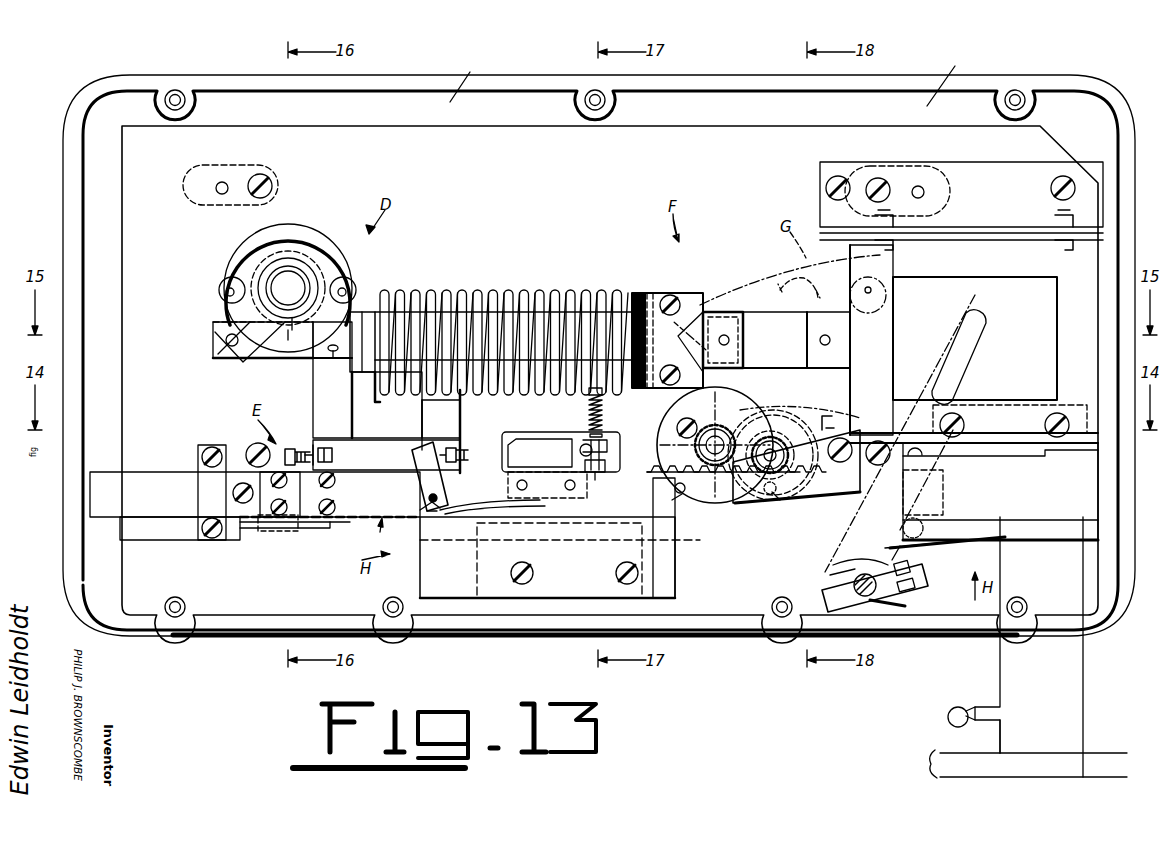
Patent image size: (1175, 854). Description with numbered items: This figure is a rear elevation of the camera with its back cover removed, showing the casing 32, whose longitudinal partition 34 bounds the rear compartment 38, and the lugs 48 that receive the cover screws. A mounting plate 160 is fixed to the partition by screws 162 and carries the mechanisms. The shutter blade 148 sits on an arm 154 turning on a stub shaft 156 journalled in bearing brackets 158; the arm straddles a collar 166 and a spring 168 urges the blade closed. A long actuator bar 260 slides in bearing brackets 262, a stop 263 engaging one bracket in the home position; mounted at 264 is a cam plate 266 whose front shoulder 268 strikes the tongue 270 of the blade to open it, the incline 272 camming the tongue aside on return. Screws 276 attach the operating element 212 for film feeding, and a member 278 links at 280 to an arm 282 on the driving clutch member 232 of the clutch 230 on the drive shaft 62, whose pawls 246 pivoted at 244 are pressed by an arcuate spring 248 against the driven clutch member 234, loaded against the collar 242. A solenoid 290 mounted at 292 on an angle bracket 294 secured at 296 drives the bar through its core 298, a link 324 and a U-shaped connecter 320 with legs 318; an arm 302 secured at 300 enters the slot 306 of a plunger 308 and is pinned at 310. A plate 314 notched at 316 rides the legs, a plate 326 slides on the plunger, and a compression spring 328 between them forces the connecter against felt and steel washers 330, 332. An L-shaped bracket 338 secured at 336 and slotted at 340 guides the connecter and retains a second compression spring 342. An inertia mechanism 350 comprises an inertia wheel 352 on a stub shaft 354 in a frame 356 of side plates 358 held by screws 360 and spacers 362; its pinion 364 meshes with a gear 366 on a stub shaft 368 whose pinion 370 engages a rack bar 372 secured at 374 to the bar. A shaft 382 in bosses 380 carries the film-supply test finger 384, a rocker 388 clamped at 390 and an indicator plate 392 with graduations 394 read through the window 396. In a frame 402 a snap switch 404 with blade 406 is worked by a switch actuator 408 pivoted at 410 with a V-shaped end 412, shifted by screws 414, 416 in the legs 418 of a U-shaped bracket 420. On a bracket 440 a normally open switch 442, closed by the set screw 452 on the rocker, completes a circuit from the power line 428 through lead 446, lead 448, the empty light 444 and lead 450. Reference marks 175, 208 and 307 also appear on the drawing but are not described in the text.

The casing 32 is at (710, 80).
The longitudinal partition 34 is at (948, 79).
The rear compartment 38 is at (468, 80).
The lugs 48 is at (191, 103).
The drive shaft 62 is at (294, 276).
The shutter blade 148 is at (602, 452).
The arm 154 is at (606, 466).
The stub shaft 156 is at (602, 409).
The bearing brackets 158 is at (590, 402).
The mounting plate 160 is at (730, 130).
The screws 162 is at (272, 192).
The collar 166 is at (596, 472).
The combined torsion and compression spring 168 is at (604, 424).
The direction 175 is at (387, 537).
The slide bar 208 is at (332, 526).
The operating element 212 is at (292, 540).
The clutch 230 is at (222, 256).
The driving clutch member 232 is at (290, 252).
The driven clutch member 234 is at (293, 333).
The collar 242 is at (300, 280).
The pivot 244 is at (226, 292).
The pawls 246 is at (222, 280).
The arcuate spring 248 is at (260, 238).
The actuator bar 260 is at (370, 532).
The bearing brackets 262 is at (200, 542).
The stop 263 is at (238, 540).
The mounting 264 is at (540, 490).
The cam plate 266 is at (545, 436).
The front shoulder 268 is at (578, 454).
The tongue 270 is at (586, 444).
The incline 272 is at (540, 453).
The screws 276 is at (274, 534).
The member 278 is at (284, 362).
The pivot connection 280 is at (240, 360).
The arm 282 is at (212, 330).
The solenoid 290 is at (1038, 336).
The mounting 292 is at (898, 248).
The angle bracket 294 is at (964, 172).
The securing points 296 is at (842, 178).
The solenoid core 298 is at (831, 368).
The securing point 300 is at (340, 496).
The arm 302 is at (348, 425).
The longitudinal slot 306 is at (333, 340).
The pin 307 is at (320, 384).
The plunger 308 is at (312, 360).
The pin 310 is at (334, 358).
The plate 314 is at (663, 296).
The notches 316 is at (674, 298).
The parallel legs 318 is at (717, 370).
The U-shaped connecter 320 is at (690, 308).
The link 324 is at (776, 368).
The plate 326 is at (380, 403).
The compression spring 328 is at (492, 284).
The felt washer 330 is at (362, 374).
The steel washer 332 is at (351, 390).
The securing point 336 is at (686, 298).
The L-shaped bracket 338 is at (648, 290).
The slot 340 is at (634, 294).
The compression spring 342 is at (542, 286).
The inertia mechanism 350 is at (810, 492).
The inertia wheel 352 is at (718, 507).
The stub shaft 354 is at (714, 472).
The frame 356 is at (794, 404).
The side plates 358 is at (830, 418).
The screws 360 is at (688, 420).
The spacers 362 is at (740, 412).
The pinion 364 is at (692, 485).
The gear 366 is at (837, 428).
The stub shaft 368 is at (771, 450).
The pinion 370 is at (782, 446).
The rack bar 372 is at (768, 494).
The securing point 374 is at (743, 504).
The bosses 380 is at (830, 574).
The shaft 382 is at (889, 593).
The film-supply test finger 384 is at (976, 374).
The rocker 388 is at (914, 568).
The clamp 390 is at (945, 533).
The indicator plate 392 is at (750, 274).
The graduations 394 is at (799, 288).
The window 396 is at (888, 308).
The frame 402 is at (450, 588).
The snap switch 404 is at (671, 574).
The actuating blade 406 is at (470, 510).
The switch actuator 408 is at (414, 460).
The pivot mounting 410 is at (428, 498).
The V-shaped end 412 is at (430, 476).
The adjustable screw 414 is at (318, 446).
The adjustable screw 416 is at (450, 446).
The parallel legs 418 is at (305, 448).
The U-shaped bracket 420 is at (392, 442).
The power line 428 is at (1013, 764).
The bracket 440 is at (1083, 440).
The snap switch 442 is at (1032, 522).
The empty light 444 is at (950, 706).
The lead 446 is at (1083, 658).
The lead 448 is at (1000, 665).
The lead 450 is at (1000, 728).
The adjustable set screw 452 is at (920, 585).